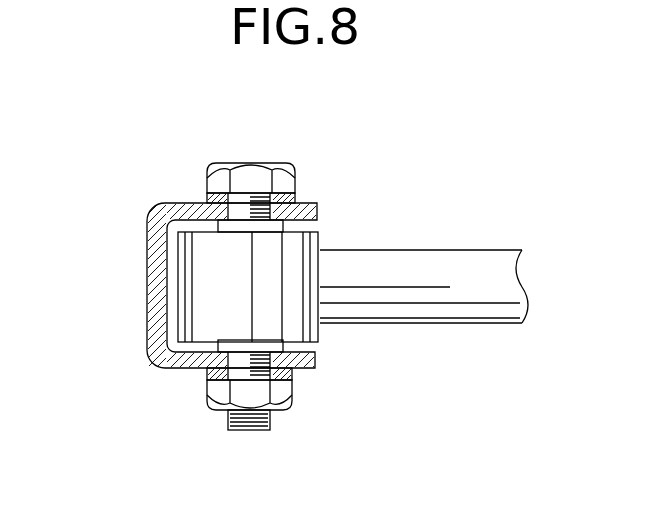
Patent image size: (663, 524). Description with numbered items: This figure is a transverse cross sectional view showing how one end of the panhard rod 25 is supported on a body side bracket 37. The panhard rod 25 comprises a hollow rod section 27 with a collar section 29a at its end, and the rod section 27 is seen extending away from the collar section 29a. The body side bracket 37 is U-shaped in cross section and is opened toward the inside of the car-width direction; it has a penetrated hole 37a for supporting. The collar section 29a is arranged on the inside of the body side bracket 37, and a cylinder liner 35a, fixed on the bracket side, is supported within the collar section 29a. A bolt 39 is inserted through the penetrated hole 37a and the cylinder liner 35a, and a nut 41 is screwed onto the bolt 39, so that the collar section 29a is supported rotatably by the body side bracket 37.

The panhard rod 25 is at (468, 251).
The hollow rod section 27 is at (400, 258).
The collar section 29a is at (306, 302).
The cylinder liner 35a is at (300, 370).
The body side bracket 37 is at (147, 232).
The penetrated hole 37a is at (232, 200).
The bolt 39 is at (258, 162).
The nut 41 is at (282, 402).